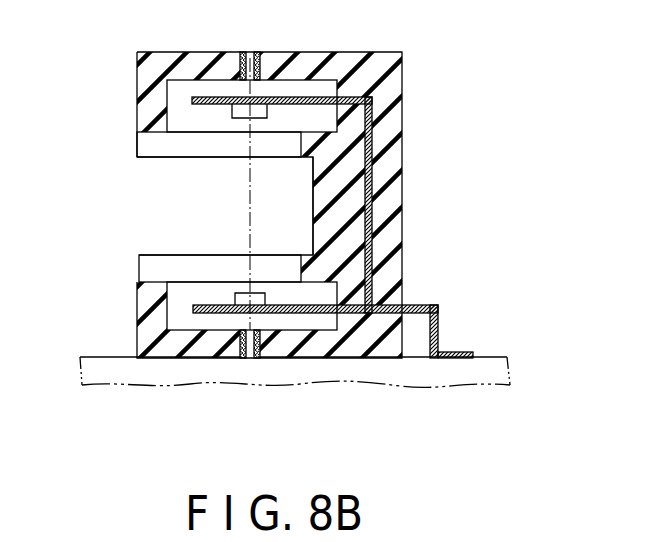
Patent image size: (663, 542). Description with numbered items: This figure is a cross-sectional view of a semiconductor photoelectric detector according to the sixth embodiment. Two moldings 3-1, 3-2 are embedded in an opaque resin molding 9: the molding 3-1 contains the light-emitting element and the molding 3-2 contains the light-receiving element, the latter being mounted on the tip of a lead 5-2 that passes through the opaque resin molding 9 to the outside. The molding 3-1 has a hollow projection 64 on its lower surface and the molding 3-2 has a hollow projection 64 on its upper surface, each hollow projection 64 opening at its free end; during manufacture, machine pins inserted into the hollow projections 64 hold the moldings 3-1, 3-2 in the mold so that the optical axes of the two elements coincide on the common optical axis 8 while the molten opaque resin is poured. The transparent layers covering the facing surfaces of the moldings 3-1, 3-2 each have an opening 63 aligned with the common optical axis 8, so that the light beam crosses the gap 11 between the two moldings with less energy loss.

The opaque resin molding 9 is at (393, 72).
The lead 5-2 is at (440, 327).
The hollow projection 64 is at (250, 53).
The molding 3-2 is at (178, 102).
The molding 3-1 is at (187, 312).
The opening 63 is at (153, 143).
The common optical axis 8 is at (249, 216).
The gap 11 is at (152, 208).